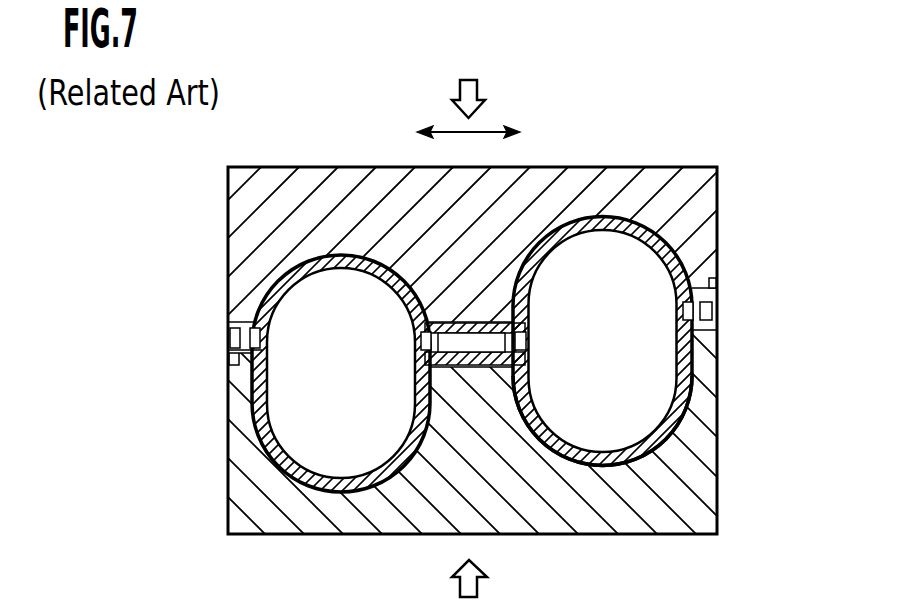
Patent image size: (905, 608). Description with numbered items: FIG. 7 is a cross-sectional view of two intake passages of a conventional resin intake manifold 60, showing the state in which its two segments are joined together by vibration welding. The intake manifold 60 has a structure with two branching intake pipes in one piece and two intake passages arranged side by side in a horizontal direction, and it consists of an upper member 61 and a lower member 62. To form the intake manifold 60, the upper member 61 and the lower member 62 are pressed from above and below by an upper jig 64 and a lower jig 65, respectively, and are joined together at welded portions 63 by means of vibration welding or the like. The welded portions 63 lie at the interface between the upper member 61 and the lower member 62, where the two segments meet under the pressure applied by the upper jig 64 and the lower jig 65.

The intake manifold 60 is at (673, 247).
The upper member 61 is at (597, 215).
The lower member 62 is at (693, 431).
The welded portions 63 is at (228, 325).
The upper jig 64 is at (240, 212).
The lower jig 65 is at (242, 452).